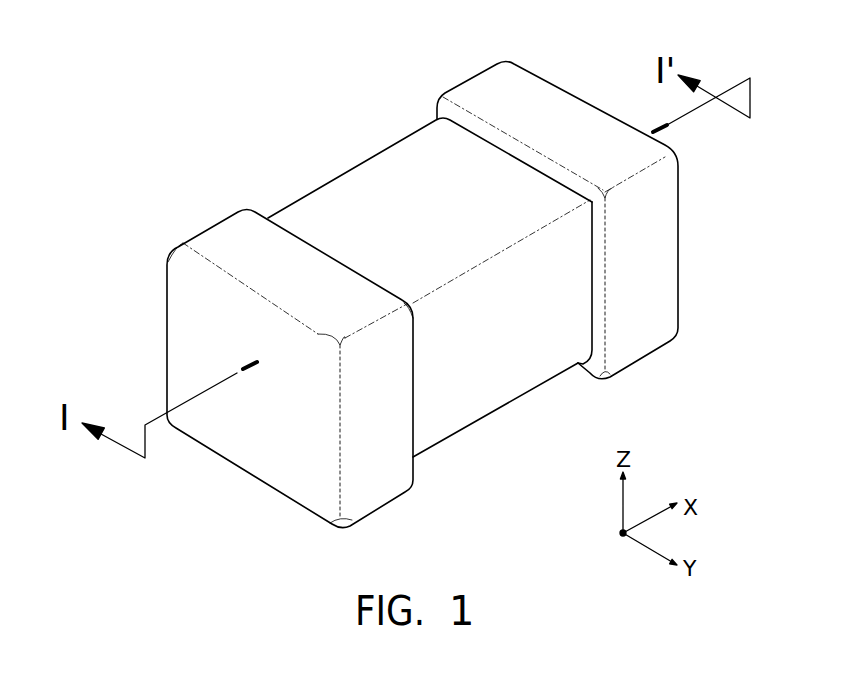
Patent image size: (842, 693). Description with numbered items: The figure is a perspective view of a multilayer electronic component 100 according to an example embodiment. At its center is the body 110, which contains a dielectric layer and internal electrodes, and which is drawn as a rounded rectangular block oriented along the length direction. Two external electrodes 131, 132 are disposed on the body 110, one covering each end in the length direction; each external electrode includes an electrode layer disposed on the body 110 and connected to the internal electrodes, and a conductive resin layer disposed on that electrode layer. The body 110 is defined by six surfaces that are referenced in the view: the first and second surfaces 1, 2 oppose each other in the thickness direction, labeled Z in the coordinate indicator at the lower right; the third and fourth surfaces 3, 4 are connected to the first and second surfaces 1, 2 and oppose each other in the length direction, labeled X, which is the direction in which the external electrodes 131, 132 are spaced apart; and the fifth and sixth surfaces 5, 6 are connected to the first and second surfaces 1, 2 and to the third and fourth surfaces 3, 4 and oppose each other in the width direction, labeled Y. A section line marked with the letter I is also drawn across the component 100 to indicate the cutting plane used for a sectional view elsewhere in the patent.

The multilayer electronic component 100 is at (227, 69).
The body 110 is at (322, 214).
The external electrode 131 is at (225, 243).
The external electrode 132 is at (481, 97).
The first surface 1 is at (464, 380).
The second surface 2 is at (440, 175).
The third surface 3 is at (260, 428).
The fourth surface 4 is at (630, 232).
The fifth surface 5 is at (523, 352).
The sixth surface 6 is at (383, 197).